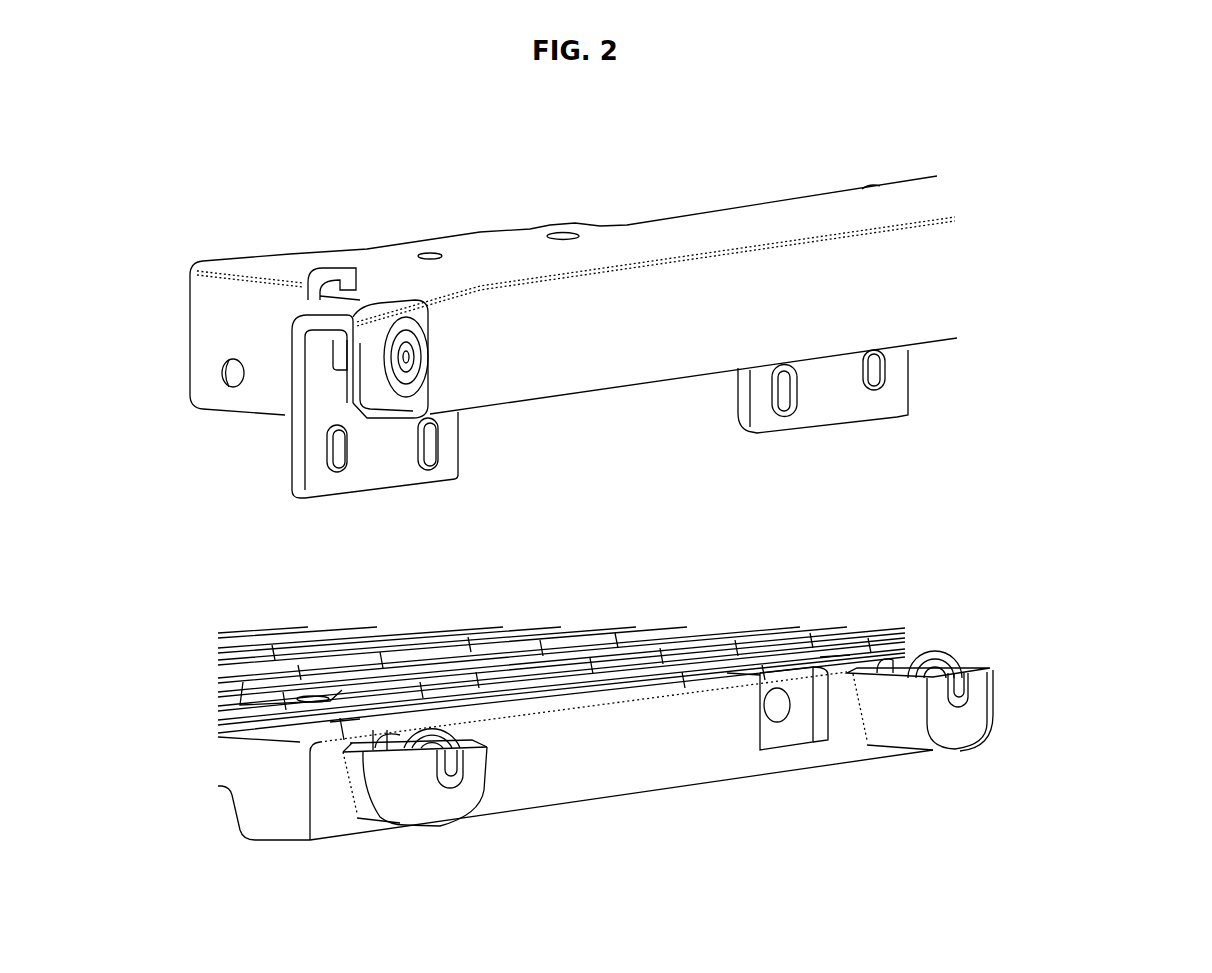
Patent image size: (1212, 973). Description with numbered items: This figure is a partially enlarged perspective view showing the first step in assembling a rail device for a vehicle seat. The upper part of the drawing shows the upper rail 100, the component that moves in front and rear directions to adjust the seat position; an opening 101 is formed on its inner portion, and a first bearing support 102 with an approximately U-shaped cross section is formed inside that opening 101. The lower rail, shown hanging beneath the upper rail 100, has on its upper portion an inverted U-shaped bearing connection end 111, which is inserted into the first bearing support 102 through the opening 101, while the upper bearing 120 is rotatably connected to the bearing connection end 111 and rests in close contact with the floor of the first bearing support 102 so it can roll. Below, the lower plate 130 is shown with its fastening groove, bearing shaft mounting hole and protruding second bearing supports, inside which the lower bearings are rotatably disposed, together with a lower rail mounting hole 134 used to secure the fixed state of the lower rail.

The upper rail 100 is at (503, 226).
The opening 101 is at (341, 282).
The first bearing support 102 is at (380, 408).
The bearing connection end 111 is at (345, 367).
The upper bearing 120 is at (392, 333).
The lower plate 130 is at (597, 810).
The lower rail mounting hole 134 is at (775, 710).